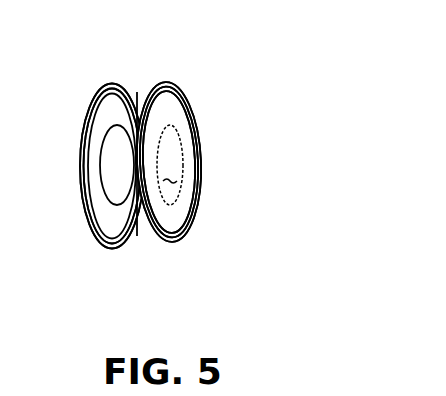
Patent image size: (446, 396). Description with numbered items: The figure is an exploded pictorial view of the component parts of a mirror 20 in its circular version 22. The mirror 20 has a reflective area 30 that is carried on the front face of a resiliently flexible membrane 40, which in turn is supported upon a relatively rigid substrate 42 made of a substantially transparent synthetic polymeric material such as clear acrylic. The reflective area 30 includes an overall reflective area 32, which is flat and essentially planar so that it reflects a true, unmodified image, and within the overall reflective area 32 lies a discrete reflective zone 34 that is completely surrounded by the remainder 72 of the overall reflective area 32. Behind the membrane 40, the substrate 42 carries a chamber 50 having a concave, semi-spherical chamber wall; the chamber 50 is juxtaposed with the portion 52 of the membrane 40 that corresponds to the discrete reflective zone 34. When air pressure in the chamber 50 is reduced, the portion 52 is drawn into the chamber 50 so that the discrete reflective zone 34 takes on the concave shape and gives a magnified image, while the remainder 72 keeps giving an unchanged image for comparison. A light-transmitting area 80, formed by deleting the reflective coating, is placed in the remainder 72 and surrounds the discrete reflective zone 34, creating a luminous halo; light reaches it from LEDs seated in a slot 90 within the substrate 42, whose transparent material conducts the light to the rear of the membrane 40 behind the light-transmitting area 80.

The mirror 20 is at (139, 86).
The circular version 22 is at (142, 246).
The reflective area 30 is at (170, 168).
The overall reflective area 32 is at (189, 188).
The discrete reflective zone 34 is at (167, 138).
The membrane 40 is at (191, 91).
The substrate 42 is at (97, 239).
The chamber 50 is at (116, 173).
The portion of the membrane 52 is at (150, 150).
The remainder of the overall reflective area 72 is at (182, 215).
The light-transmitting area 80 is at (180, 238).
The slot 90 is at (94, 127).